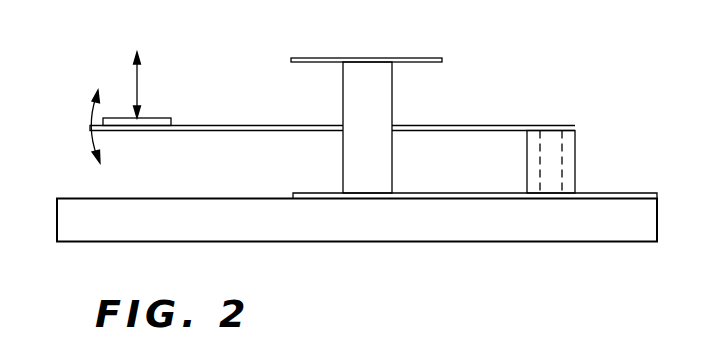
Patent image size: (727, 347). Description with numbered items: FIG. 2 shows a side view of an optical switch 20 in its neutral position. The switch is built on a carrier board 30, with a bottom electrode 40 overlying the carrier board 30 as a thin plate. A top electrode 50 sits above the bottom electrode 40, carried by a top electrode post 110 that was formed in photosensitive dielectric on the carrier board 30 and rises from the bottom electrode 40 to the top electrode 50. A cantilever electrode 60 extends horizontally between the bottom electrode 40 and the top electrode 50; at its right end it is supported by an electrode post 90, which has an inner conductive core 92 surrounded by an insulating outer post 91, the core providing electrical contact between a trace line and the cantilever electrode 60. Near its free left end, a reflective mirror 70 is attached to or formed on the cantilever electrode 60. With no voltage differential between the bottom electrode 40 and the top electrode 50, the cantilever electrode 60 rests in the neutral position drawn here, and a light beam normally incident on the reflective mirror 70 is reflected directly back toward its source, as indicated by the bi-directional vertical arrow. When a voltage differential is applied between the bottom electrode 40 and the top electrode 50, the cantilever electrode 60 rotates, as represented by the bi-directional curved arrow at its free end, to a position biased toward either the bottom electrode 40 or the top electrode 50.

The optical switch 20 is at (355, 273).
The carrier board 30 is at (635, 243).
The bottom electrode 40 is at (303, 193).
The top electrode 50 is at (418, 57).
The cantilever electrode 60 is at (260, 126).
The reflective mirror 70 is at (153, 117).
The electrode post 90 is at (588, 162).
The insulating outer post 91 is at (571, 149).
The inner conductive core 92 is at (535, 180).
The top electrode post 110 is at (343, 96).